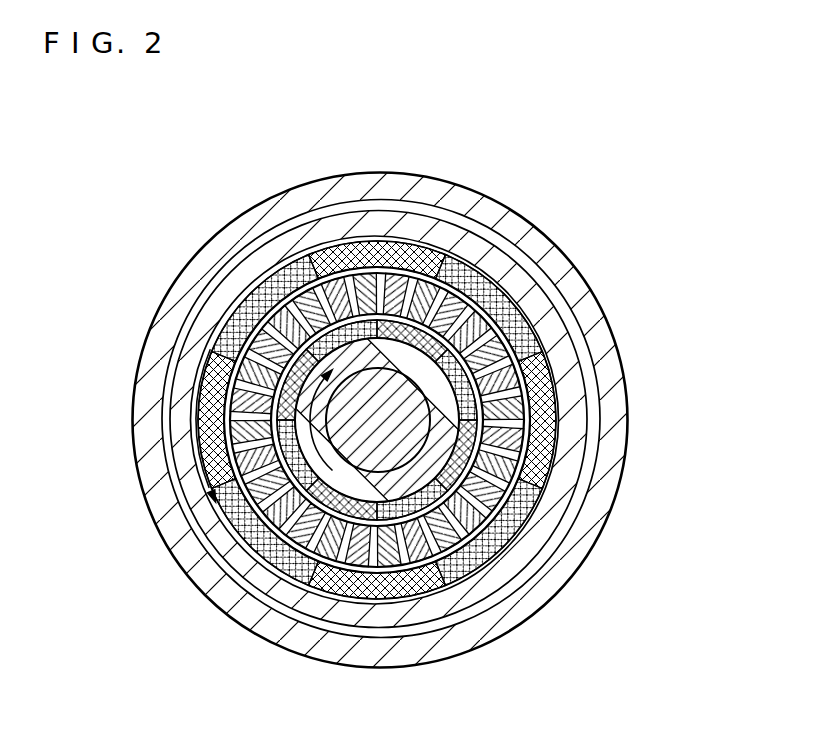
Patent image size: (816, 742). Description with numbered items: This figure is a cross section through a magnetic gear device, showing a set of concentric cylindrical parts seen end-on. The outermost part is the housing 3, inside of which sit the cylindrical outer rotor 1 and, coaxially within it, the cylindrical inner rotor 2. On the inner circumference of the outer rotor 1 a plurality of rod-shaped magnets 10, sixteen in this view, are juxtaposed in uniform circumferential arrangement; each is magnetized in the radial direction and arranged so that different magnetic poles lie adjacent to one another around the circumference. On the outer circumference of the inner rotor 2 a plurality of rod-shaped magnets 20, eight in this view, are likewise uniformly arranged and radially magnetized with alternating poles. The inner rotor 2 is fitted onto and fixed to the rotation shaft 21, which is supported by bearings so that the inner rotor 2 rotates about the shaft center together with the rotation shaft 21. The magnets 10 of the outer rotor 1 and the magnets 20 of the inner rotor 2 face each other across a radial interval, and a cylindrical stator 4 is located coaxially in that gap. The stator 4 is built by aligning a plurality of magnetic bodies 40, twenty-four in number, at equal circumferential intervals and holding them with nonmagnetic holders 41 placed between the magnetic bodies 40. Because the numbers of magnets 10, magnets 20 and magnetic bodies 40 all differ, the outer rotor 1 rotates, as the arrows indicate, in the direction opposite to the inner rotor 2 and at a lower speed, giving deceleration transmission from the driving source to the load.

The outer rotor 1 is at (557, 297).
The inner rotor 2 is at (473, 255).
The housing 3 is at (537, 238).
The stator 4 is at (377, 311).
The magnets 10 is at (553, 383).
The magnets 20 is at (507, 533).
The rotation shaft 21 is at (333, 410).
The magnetic bodies 40 is at (370, 282).
The nonmagnetic holders 41 is at (322, 282).